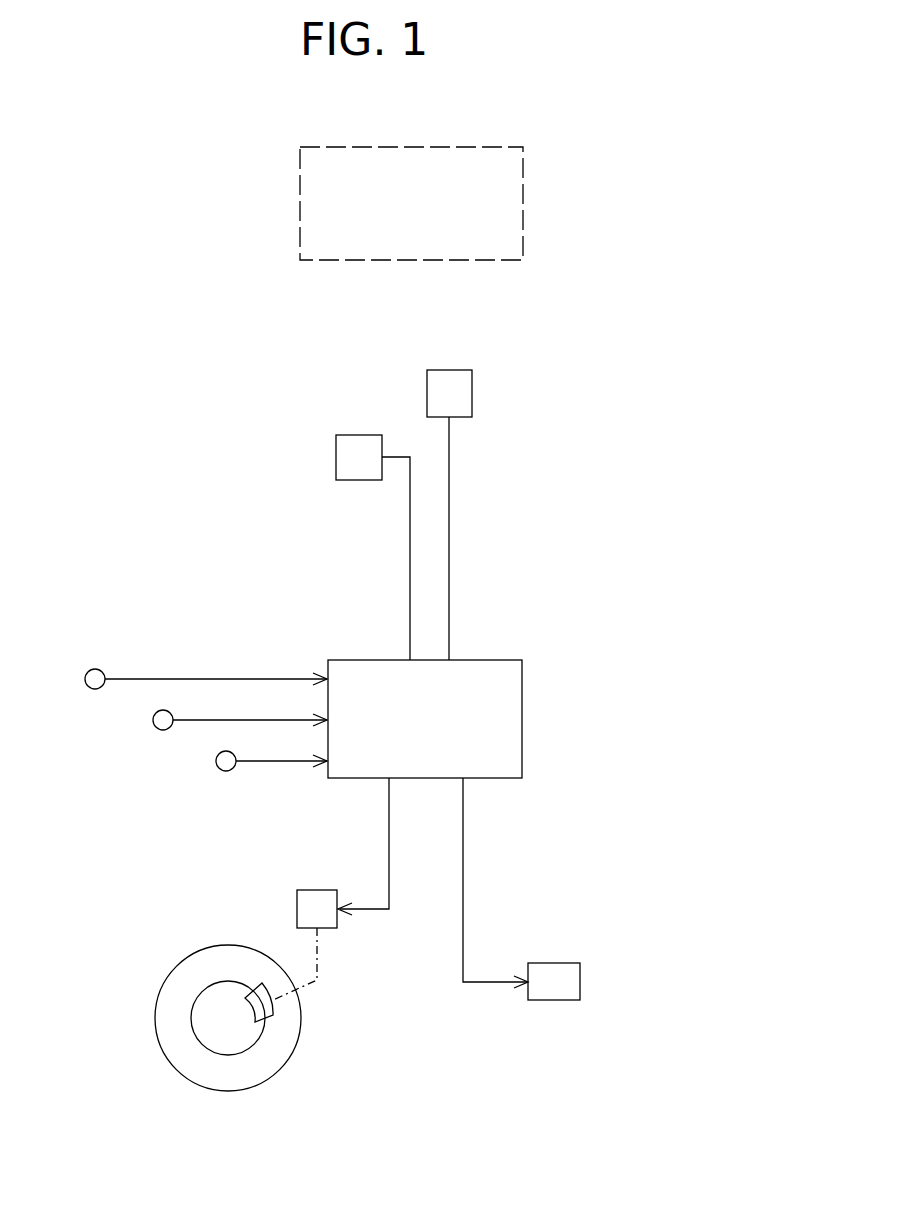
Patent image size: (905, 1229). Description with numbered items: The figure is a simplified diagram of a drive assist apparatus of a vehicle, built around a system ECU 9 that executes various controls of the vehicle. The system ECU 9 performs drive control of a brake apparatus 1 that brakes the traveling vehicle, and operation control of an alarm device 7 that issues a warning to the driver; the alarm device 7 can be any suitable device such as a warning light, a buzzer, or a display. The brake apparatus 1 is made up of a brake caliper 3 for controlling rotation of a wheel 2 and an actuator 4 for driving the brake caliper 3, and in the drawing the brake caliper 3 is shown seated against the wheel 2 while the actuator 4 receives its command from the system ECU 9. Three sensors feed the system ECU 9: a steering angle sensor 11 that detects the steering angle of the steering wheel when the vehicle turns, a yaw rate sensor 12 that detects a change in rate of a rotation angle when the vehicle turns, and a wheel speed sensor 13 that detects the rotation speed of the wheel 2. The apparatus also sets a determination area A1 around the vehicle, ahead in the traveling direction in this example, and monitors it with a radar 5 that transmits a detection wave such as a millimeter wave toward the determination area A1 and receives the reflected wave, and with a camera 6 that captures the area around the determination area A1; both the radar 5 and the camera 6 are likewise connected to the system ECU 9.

The determination area A1 is at (524, 200).
The brake apparatus 1 is at (279, 956).
The wheel 2 is at (294, 1058).
The brake caliper 3 is at (259, 971).
The actuator 4 is at (296, 902).
The radar 5 is at (362, 434).
The camera 6 is at (451, 369).
The alarm device 7 is at (545, 962).
The system ECU 9 is at (494, 659).
The steering angle sensor 11 is at (84, 678).
The yaw rate sensor 12 is at (152, 719).
The wheel speed sensor 13 is at (215, 760).